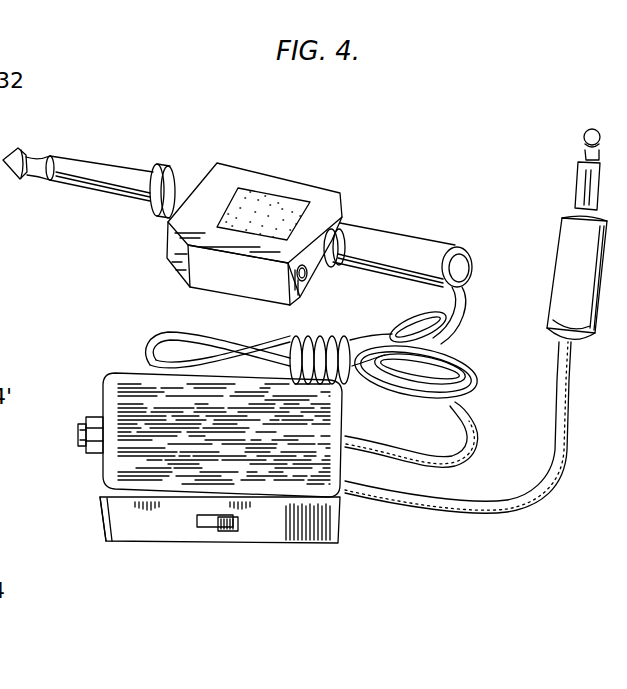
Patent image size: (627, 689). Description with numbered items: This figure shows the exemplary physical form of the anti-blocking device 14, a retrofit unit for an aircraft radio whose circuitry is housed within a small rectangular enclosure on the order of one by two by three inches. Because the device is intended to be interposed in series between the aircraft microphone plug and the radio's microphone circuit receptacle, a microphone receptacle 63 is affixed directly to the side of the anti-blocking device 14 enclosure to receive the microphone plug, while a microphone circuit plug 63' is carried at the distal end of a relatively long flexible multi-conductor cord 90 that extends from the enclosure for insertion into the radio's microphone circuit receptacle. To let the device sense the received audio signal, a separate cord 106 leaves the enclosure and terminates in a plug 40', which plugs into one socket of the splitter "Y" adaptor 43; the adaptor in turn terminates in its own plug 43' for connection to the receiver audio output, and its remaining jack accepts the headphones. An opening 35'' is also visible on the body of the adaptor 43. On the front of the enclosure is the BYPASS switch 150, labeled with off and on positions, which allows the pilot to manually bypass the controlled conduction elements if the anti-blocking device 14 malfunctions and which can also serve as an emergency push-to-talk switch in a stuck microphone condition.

The anti-blocking device 14 is at (279, 545).
The pilot lamp opening 35'' is at (338, 295).
The plug 40' is at (398, 244).
The dual-socket "Y" adaptor 43 is at (254, 218).
The plug of the Y adaptor 43' is at (89, 170).
The microphone receptacle 63 is at (78, 449).
The microphone circuit plug 63' is at (582, 255).
The flexible multi-conductor cord 90 is at (478, 514).
The cord 106 is at (462, 410).
The BYPASS switch 150 is at (230, 549).